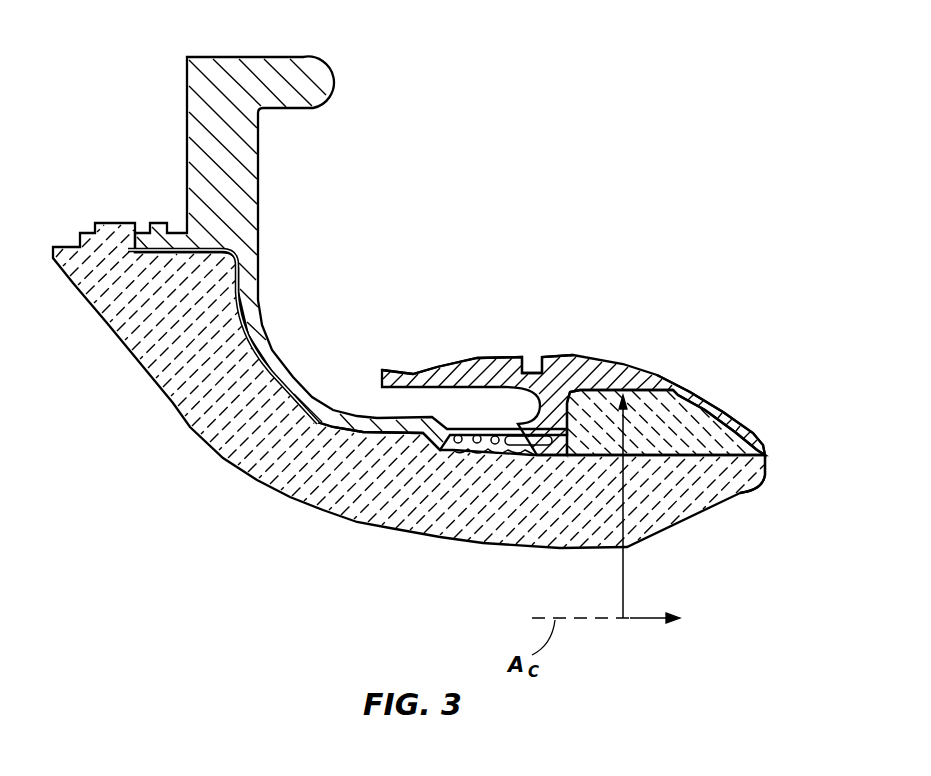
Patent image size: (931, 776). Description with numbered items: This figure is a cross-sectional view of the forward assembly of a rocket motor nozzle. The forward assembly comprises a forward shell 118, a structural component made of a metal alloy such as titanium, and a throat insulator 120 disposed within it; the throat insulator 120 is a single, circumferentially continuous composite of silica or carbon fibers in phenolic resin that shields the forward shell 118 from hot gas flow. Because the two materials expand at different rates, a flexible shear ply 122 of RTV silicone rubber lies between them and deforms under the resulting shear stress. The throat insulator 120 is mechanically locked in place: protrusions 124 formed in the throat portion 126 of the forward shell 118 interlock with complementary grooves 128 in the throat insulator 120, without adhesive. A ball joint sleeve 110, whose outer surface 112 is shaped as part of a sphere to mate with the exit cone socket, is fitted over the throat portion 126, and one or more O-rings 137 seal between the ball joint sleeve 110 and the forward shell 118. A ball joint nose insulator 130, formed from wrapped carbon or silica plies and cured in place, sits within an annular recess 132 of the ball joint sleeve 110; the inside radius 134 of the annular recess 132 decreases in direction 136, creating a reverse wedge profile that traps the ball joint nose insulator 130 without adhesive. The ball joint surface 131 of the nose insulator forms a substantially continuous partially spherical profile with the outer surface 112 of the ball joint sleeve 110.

The ball joint sleeve 110 is at (587, 362).
The outer surface 112 is at (557, 357).
The forward shell 118 is at (230, 228).
The throat insulator 120 is at (215, 400).
The flexible shear ply 122 is at (238, 277).
The protrusions 124 is at (528, 442).
The throat portion 126 is at (445, 408).
The grooves 128 is at (528, 460).
The ball joint nose insulator 130 is at (712, 418).
The ball joint surface 131 is at (757, 426).
The annular recess 132 is at (651, 393).
The inside radius 134 is at (624, 585).
The direction 136 is at (643, 620).
The O-rings 137 is at (477, 443).